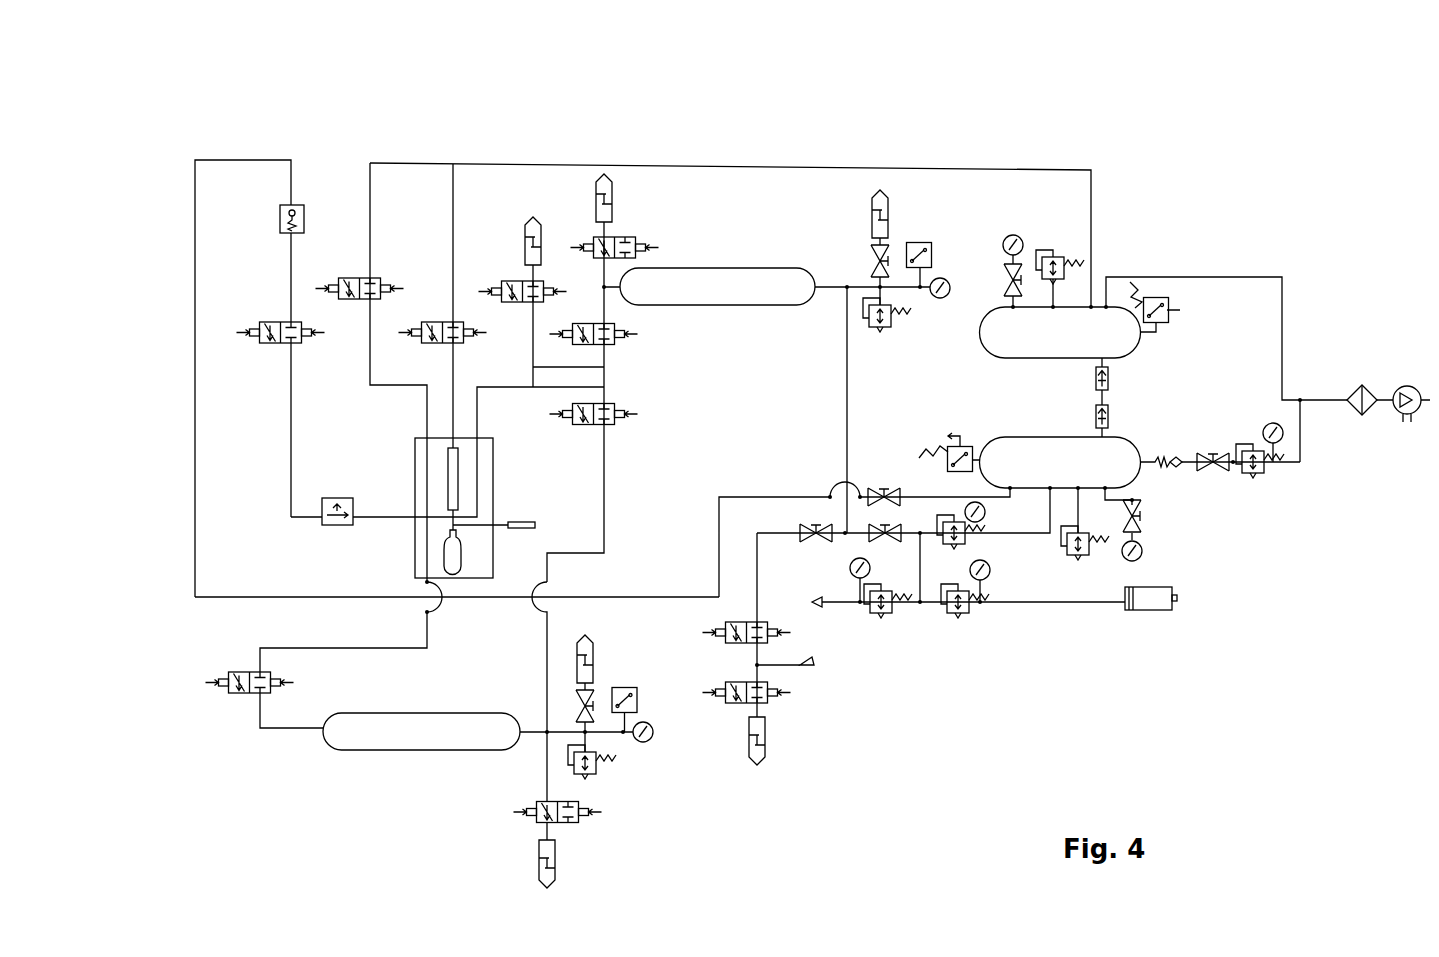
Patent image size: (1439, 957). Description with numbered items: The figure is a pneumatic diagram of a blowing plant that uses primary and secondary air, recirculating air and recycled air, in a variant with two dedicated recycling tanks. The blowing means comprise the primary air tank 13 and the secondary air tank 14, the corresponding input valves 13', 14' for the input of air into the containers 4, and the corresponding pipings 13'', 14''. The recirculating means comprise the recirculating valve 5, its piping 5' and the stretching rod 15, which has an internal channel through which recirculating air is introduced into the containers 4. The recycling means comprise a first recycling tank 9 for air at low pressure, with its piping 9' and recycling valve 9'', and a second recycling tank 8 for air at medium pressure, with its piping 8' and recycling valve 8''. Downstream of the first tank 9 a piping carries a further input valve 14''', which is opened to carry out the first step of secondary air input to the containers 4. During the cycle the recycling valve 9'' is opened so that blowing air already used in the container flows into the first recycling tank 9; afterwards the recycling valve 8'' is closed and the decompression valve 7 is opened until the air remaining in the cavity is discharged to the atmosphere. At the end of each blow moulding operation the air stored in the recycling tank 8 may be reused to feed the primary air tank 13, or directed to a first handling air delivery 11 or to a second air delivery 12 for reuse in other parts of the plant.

The container 4 is at (451, 553).
The recirculating valve 5 is at (443, 213).
The piping 5' is at (486, 256).
The decompression valve 7 is at (510, 287).
The second recycling tank 8 is at (717, 200).
The piping 8' is at (624, 385).
The recycling valve 8'' is at (651, 342).
The first recycling tank 9 is at (421, 795).
The piping 9' is at (622, 484).
The recycling valve 9'' is at (637, 434).
The first handling air delivery 11 is at (1050, 600).
The second air delivery 12 is at (810, 665).
The primary air tank 13 is at (1127, 504).
The input valve 13' is at (211, 290).
The piping 13'' is at (174, 430).
The secondary air tank 14 is at (1086, 267).
The input valve 14' is at (351, 182).
The piping 14'' is at (624, 165).
The further input valve 14''' is at (194, 714).
The stretching rod 15 is at (455, 478).